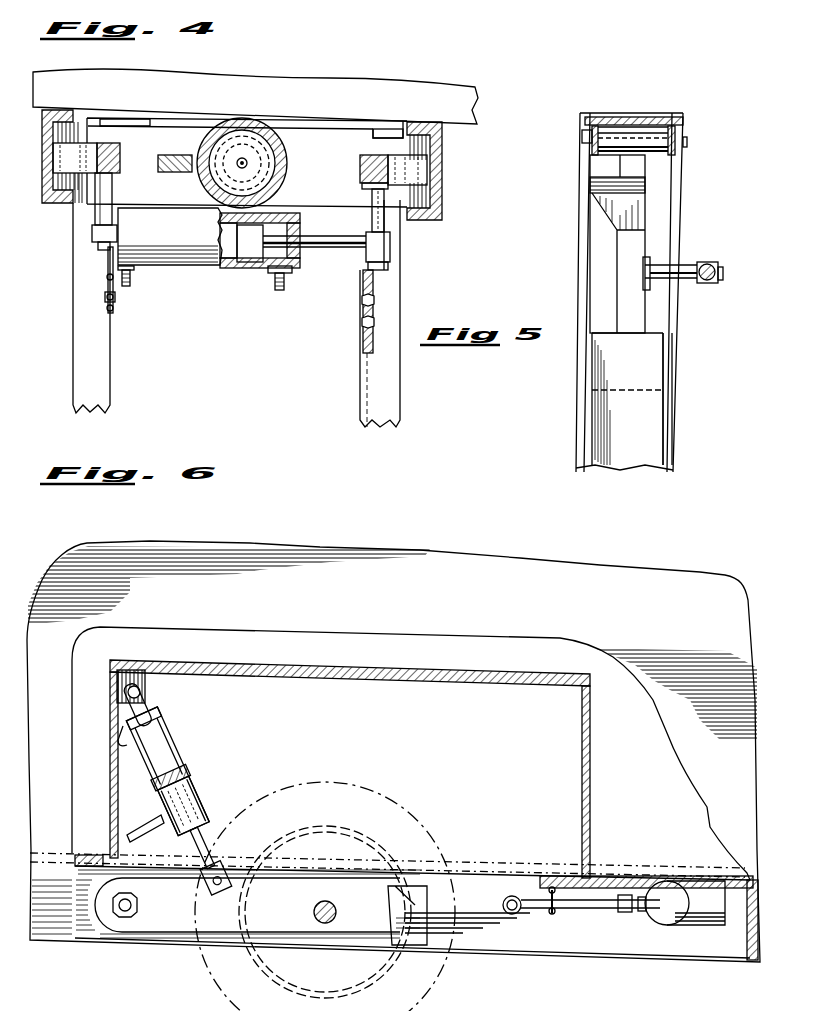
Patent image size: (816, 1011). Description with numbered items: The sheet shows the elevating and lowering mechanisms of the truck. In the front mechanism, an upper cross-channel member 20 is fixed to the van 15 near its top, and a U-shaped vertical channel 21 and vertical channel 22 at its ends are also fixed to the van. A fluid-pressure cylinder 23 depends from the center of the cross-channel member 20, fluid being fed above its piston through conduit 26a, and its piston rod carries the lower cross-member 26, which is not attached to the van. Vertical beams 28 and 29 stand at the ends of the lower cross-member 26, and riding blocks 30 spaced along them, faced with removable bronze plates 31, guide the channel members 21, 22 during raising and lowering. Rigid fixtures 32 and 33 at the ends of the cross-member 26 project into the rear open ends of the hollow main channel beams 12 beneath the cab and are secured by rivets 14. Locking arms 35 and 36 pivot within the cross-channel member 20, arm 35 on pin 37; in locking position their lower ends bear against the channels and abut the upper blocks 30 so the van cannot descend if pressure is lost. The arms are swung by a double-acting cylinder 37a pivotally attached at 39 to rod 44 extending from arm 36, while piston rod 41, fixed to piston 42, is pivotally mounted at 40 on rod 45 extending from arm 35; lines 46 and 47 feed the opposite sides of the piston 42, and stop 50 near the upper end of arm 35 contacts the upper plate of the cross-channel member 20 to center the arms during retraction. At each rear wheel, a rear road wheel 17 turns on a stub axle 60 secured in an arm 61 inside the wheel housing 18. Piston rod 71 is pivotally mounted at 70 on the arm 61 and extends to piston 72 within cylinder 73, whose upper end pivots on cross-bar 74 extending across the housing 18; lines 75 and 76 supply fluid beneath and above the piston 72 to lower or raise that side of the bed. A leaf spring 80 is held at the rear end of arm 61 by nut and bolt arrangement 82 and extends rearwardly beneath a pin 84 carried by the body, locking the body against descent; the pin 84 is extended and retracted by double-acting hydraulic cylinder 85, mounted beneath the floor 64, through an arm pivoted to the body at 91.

In FIG. 4, the main channel beams 12 is at (100, 358).
In FIG. 4, the rivets 14 is at (112, 312).
In FIG. 4, the van 15 is at (320, 75).
In FIG. 6, the rear road wheels 17 is at (440, 975).
In FIG. 6, the wheel housings 18 is at (110, 816).
In FIG. 5, the upper cross-channel member 20 is at (649, 118).
In FIG. 4, the vertical channel 21 is at (441, 166).
In FIG. 5, the vertical channel 21 is at (672, 369).
In FIG. 4, the vertical channel 22 is at (62, 205).
In FIG. 4, the fluid-pressure cylinder 23 is at (287, 170).
In FIG. 4, the lower cross-member 26 is at (160, 124).
In FIG. 4, the conduit 26a is at (171, 155).
In FIG. 4, the vertical beam 28 is at (390, 128).
In FIG. 5, the vertical beam 28 is at (652, 430).
In FIG. 4, the vertical beam 29 is at (108, 122).
In FIG. 4, the riding blocks 30 is at (80, 208).
In FIG. 4, the removable bronze plates 31 is at (53, 138).
In FIG. 4, the fixture 32 is at (400, 257).
In FIG. 4, the fixture 33 is at (115, 299).
In FIG. 4, the locking arm 35 is at (362, 168).
In FIG. 5, the locking arm 35 is at (640, 246).
In FIG. 4, the locking arm 36 is at (118, 150).
In FIG. 5, the pin 37 is at (677, 135).
In FIG. 4, the cylinder 37a is at (211, 268).
In FIG. 4, the pivotal attachment 39 is at (97, 244).
In FIG. 4, the pivot mounting 40 is at (386, 267).
In FIG. 5, the pivot mounting 40 is at (713, 263).
In FIG. 4, the piston rod 41 is at (337, 236).
In FIG. 4, the piston 42 is at (250, 266).
In FIG. 4, the rod 44 is at (113, 197).
In FIG. 4, the rod 45 is at (384, 227).
In FIG. 5, the rod 45 is at (684, 283).
In FIG. 4, the line 46 is at (285, 282).
In FIG. 4, the line 47 is at (131, 278).
In FIG. 5, the stop 50 is at (592, 181).
In FIG. 6, the stub axles 60 is at (314, 913).
In FIG. 6, the arms 61 is at (148, 935).
In FIG. 6, the floor 64 is at (666, 876).
In FIG. 6, the pivot mounting 70 is at (214, 897).
In FIG. 6, the piston rod 71 is at (210, 813).
In FIG. 6, the piston 72 is at (180, 753).
In FIG. 6, the cylinder 73 is at (179, 748).
In FIG. 6, the cross-bar 74 is at (139, 670).
In FIG. 6, the line 75 is at (147, 833).
In FIG. 6, the line 76 is at (125, 749).
In FIG. 6, the leaf springs 80 is at (503, 925).
In FIG. 6, the nut and bolt arrangements 82 is at (405, 886).
In FIG. 6, the pins 84 is at (503, 904).
In FIG. 6, the double-acting hydraulic cylinder 85 is at (675, 928).
In FIG. 6, the pivot 91 is at (552, 913).